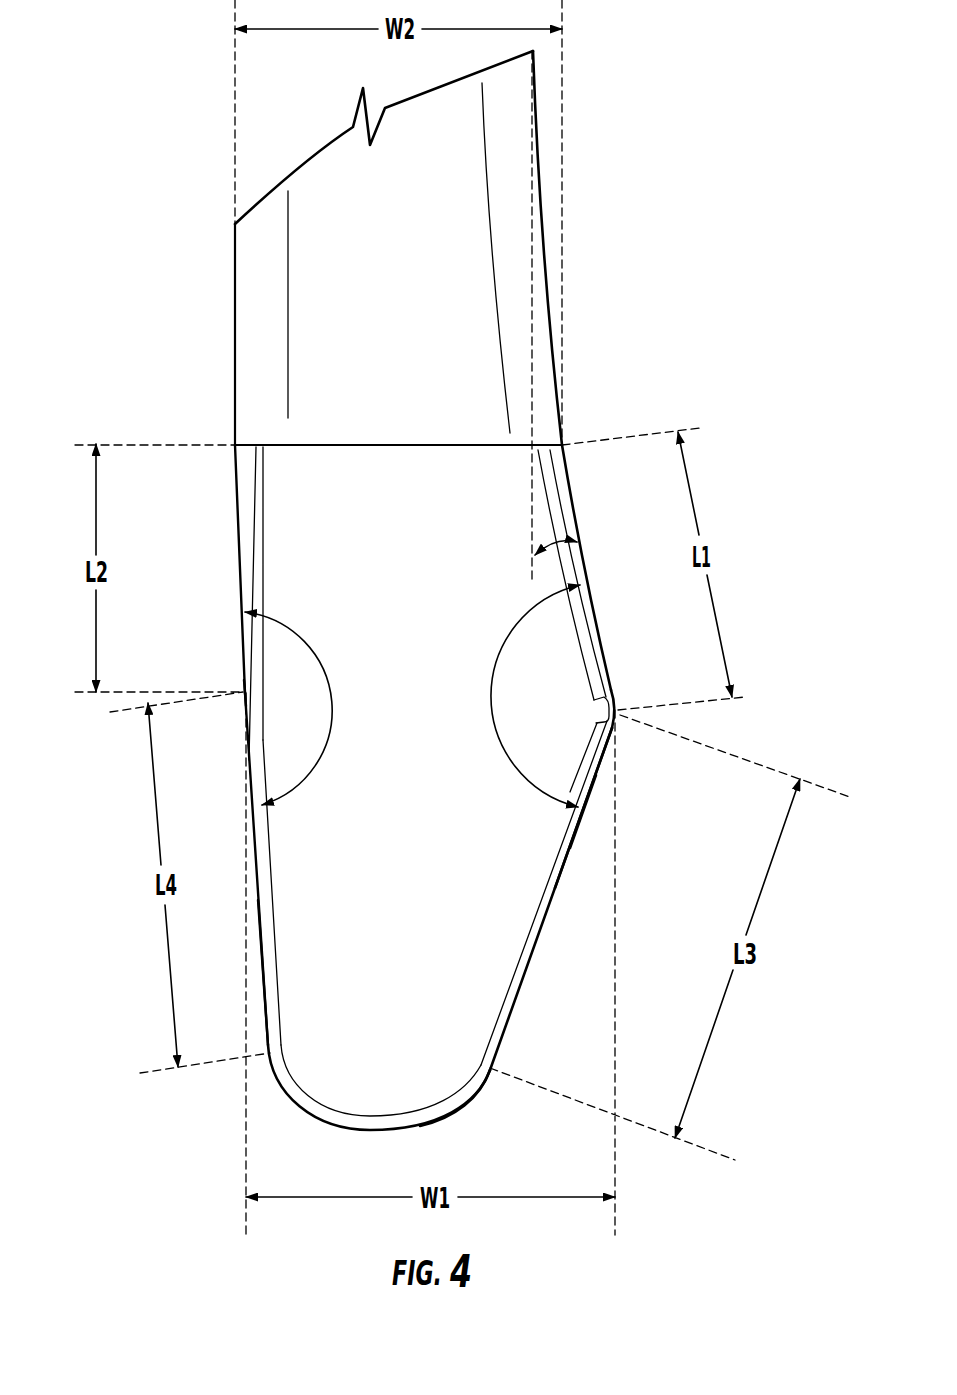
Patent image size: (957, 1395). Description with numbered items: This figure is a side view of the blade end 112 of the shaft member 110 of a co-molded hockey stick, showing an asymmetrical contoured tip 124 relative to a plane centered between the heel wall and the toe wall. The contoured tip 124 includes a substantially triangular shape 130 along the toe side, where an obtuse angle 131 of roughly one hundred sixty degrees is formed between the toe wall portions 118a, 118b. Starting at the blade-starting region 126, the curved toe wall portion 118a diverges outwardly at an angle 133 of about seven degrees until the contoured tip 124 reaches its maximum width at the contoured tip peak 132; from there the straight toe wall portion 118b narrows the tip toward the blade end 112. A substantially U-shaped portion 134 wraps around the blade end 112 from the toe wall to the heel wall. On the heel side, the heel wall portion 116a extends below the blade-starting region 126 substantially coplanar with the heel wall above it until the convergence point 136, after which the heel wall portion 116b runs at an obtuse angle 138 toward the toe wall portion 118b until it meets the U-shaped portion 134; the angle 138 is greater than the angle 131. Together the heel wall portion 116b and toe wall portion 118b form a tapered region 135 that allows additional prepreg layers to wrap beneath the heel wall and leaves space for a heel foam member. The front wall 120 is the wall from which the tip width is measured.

The shaft member 110 is at (190, 118).
The blade end 112 is at (373, 1130).
The heel wall portion 116a is at (240, 527).
The heel wall portion 116b is at (255, 862).
The toe wall portion 118a is at (570, 490).
The toe wall portion 118b is at (563, 867).
The front wall 120 is at (343, 517).
The contoured tip 124 is at (500, 902).
The blade-starting region 126 is at (497, 445).
The substantially triangular shape 130 is at (555, 757).
The angle 131 is at (493, 692).
The contoured tip peak 132 is at (618, 710).
The angle 133 is at (556, 545).
The substantially U-shaped portion 134 is at (460, 1100).
The tapered region 135 is at (267, 1013).
The convergence point 136 is at (243, 693).
The angle 138 is at (336, 721).